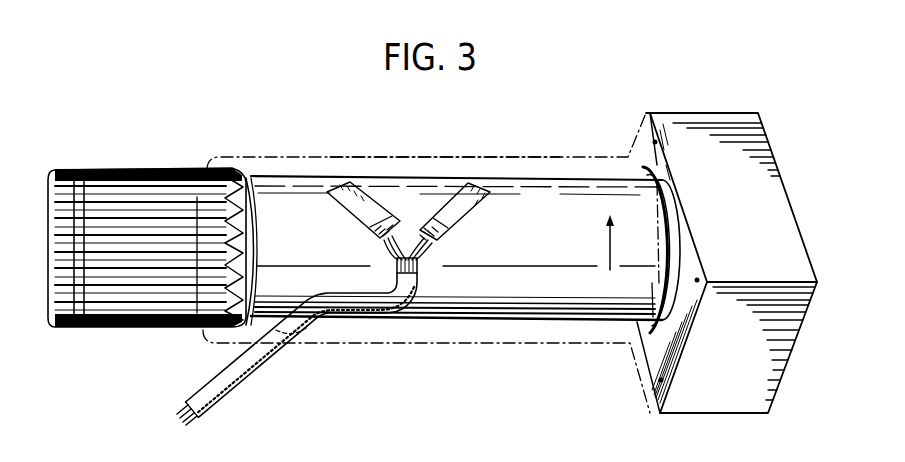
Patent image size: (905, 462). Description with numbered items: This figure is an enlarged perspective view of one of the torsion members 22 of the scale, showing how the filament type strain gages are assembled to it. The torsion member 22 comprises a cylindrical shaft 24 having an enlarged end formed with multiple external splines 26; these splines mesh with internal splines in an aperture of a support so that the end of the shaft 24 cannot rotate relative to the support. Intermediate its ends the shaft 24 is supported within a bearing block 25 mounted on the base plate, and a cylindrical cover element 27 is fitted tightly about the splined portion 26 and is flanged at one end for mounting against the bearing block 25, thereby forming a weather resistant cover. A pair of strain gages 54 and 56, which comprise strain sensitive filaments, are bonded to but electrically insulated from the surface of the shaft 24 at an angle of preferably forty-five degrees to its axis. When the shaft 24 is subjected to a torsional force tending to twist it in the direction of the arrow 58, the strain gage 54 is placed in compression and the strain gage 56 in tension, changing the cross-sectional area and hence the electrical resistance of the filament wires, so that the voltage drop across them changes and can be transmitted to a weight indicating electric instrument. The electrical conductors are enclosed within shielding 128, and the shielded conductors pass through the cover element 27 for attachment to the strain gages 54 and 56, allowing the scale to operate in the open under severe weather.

The torsion member 22 is at (322, 150).
The cylindrical shaft 24 is at (548, 178).
The bearing block 25 is at (703, 121).
The external splines 26 is at (137, 168).
The cylindrical cover element 27 is at (433, 156).
The strain gage 54 is at (352, 202).
The strain gage 56 is at (464, 212).
The arrow 58 is at (610, 247).
The shielding 128 is at (218, 393).